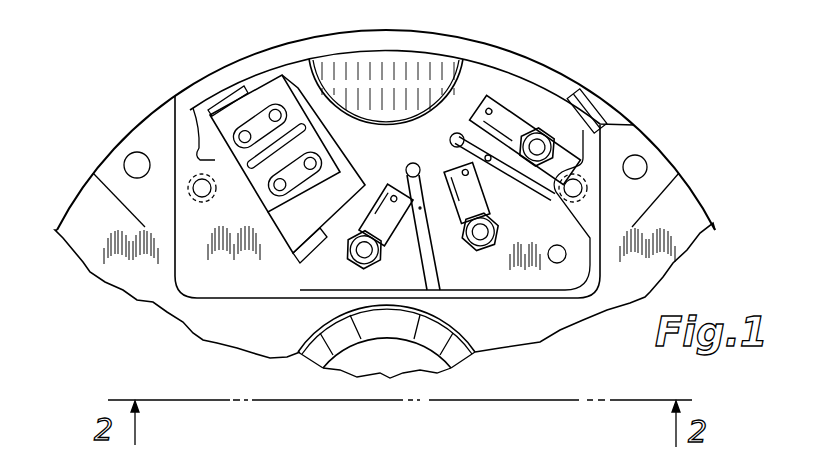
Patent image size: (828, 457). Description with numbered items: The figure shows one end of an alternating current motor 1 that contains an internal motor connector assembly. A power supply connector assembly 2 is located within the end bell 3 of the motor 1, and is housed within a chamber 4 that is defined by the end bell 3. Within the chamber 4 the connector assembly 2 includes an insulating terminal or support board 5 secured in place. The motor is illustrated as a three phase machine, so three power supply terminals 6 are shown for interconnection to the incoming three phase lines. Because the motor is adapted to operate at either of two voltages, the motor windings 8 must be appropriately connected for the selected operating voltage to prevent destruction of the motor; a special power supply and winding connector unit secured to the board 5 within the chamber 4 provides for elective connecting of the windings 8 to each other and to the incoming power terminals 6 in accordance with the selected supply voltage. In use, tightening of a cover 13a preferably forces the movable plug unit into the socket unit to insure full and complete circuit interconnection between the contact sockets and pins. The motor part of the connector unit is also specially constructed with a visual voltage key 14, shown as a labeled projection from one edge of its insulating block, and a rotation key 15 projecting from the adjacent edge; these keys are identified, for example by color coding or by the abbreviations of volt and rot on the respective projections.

The alternating current motor 1 is at (648, 127).
The power supply connector assembly 2 is at (499, 87).
The end bell 3 is at (682, 198).
The chamber 4 is at (418, 99).
The insulating terminal or support board 5 is at (300, 68).
The power supply terminals 6 is at (537, 160).
The motor windings 8 is at (80, 221).
The cover 13a is at (238, 288).
The visual voltage key 14 is at (358, 174).
The rotation key 15 is at (306, 256).